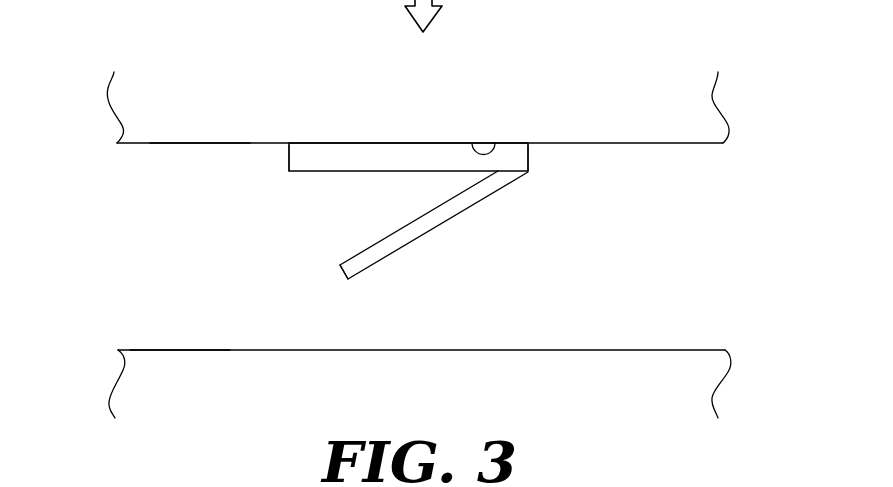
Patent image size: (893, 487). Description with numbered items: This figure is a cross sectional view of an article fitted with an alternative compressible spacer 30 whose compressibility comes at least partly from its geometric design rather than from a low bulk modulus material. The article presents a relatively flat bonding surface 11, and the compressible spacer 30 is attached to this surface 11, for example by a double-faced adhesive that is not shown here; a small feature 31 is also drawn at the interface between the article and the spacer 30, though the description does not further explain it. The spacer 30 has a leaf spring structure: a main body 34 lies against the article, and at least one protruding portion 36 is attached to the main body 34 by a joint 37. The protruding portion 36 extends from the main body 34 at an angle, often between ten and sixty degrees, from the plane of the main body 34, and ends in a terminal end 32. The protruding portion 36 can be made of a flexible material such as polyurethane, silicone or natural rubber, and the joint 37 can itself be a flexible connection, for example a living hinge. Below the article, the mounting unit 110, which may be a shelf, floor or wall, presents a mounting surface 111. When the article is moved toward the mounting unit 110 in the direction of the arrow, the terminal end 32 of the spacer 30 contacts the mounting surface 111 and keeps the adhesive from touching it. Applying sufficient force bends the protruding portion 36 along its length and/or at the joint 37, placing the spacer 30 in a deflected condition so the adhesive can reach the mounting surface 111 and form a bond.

The bonding surface 11 is at (152, 145).
The compressible spacer 30 is at (340, 154).
The hole 31 is at (488, 152).
The main body 34 is at (307, 157).
The joint 37 is at (510, 165).
The protruding portion 36 is at (425, 221).
The terminal end 32 is at (343, 273).
The mounting unit 110 is at (128, 388).
The mounting surface 111 is at (165, 350).